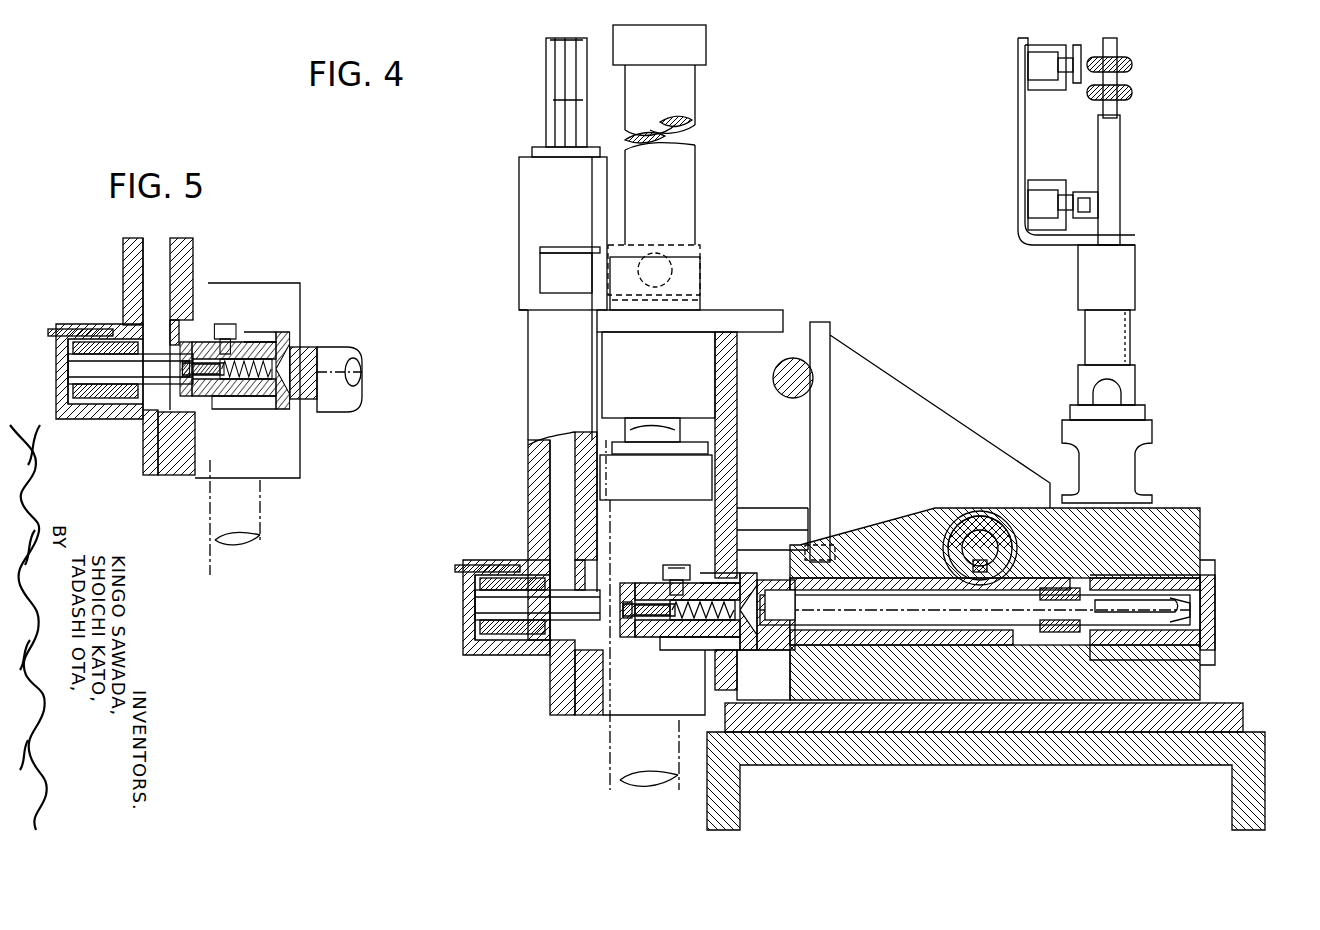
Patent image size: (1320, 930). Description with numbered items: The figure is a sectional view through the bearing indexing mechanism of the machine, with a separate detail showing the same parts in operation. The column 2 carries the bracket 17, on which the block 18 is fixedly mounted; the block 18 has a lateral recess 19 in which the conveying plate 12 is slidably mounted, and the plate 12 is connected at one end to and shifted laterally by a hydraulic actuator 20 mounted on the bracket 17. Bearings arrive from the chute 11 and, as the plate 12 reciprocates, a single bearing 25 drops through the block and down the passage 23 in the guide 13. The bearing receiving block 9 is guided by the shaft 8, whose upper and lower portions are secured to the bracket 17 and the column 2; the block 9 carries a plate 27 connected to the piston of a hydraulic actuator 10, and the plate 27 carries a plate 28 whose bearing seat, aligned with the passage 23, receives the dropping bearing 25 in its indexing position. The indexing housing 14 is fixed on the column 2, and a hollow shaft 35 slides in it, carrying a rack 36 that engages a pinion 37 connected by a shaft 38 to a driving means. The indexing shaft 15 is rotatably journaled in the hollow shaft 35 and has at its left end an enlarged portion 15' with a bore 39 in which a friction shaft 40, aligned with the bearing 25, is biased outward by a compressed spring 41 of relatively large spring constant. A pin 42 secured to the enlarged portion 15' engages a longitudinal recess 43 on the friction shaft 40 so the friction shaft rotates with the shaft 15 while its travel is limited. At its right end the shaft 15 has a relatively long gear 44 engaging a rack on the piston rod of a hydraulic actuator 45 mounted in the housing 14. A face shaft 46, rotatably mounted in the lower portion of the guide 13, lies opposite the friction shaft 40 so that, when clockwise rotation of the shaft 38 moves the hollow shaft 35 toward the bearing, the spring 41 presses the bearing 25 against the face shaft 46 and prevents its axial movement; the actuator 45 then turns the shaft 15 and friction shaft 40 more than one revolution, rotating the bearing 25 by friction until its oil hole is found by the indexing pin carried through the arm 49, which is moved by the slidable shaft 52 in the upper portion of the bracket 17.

In FIG. 4, the column 2 is at (1258, 772).
In FIG. 4, the shaft 8 is at (641, 761).
In FIG. 5, the shaft 8 is at (232, 529).
In FIG. 4, the bearing receiving block 9 is at (603, 759).
In FIG. 5, the bearing receiving block 9 is at (198, 527).
In FIG. 4, the hydraulic actuator 10 is at (685, 192).
In FIG. 4, the chute 11 is at (546, 91).
In FIG. 4, the conveying plate 12 is at (538, 280).
In FIG. 4, the guide 13 is at (528, 487).
In FIG. 5, the guide 13 is at (133, 261).
In FIG. 4, the indexing housing 14 is at (1195, 536).
In FIG. 4, the indexing shaft 15 is at (975, 696).
In FIG. 5, the indexing shaft 15 is at (339, 326).
In FIG. 4, the enlarged portion 15' is at (706, 636).
In FIG. 5, the enlarged portion 15' is at (258, 399).
In FIG. 4, the bracket 17 is at (771, 310).
In FIG. 4, the block 18 is at (528, 222).
In FIG. 4, the lateral recess 19 is at (538, 251).
In FIG. 4, the hydraulic actuator 20 is at (705, 263).
In FIG. 4, the passage 23 is at (550, 517).
In FIG. 5, the passage 23 is at (156, 279).
In FIG. 4, the bearing 25 is at (544, 653).
In FIG. 5, the bearing 25 is at (140, 423).
In FIG. 4, the plate 27 is at (588, 709).
In FIG. 5, the plate 27 is at (180, 479).
In FIG. 4, the plate 28 is at (557, 701).
In FIG. 5, the plate 28 is at (150, 476).
In FIG. 4, the hollow shaft 35 is at (893, 645).
In FIG. 4, the rack 36 is at (943, 511).
In FIG. 4, the pinion 37 is at (982, 515).
In FIG. 4, the shaft 38 is at (991, 530).
In FIG. 4, the bore 39 is at (664, 638).
In FIG. 5, the bore 39 is at (245, 400).
In FIG. 4, the friction shaft 40 is at (701, 638).
In FIG. 5, the friction shaft 40 is at (279, 400).
In FIG. 4, the compressed spring 41 is at (703, 574).
In FIG. 5, the compressed spring 41 is at (274, 337).
In FIG. 4, the pin 42 is at (680, 580).
In FIG. 5, the pin 42 is at (240, 334).
In FIG. 4, the longitudinal recess 43 is at (666, 576).
In FIG. 5, the longitudinal recess 43 is at (216, 319).
In FIG. 4, the gear 44 is at (1215, 575).
In FIG. 4, the hydraulic actuator 45 is at (1125, 289).
In FIG. 4, the face shaft 46 is at (536, 653).
In FIG. 5, the face shaft 46 is at (130, 423).
In FIG. 4, the arm 49 is at (834, 322).
In FIG. 4, the shaft 52 is at (809, 316).